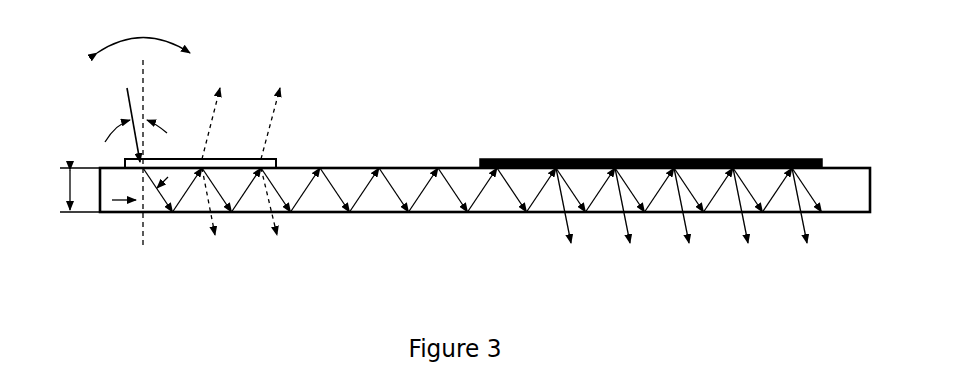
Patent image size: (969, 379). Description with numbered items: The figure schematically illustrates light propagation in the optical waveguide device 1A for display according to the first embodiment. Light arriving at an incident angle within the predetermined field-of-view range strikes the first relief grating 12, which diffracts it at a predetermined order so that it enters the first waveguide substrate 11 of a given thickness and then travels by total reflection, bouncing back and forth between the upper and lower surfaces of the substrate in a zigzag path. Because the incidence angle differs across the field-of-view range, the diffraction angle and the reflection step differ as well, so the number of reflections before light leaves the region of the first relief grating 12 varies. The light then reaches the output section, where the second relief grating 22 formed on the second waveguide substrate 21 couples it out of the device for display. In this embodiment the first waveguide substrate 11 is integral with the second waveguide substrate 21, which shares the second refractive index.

The optical waveguide device for display 1A is at (418, 60).
The first waveguide substrate 11 is at (315, 213).
The first relief grating 12 is at (277, 164).
The second waveguide substrate 21 is at (697, 213).
The second relief grating 22 is at (763, 159).